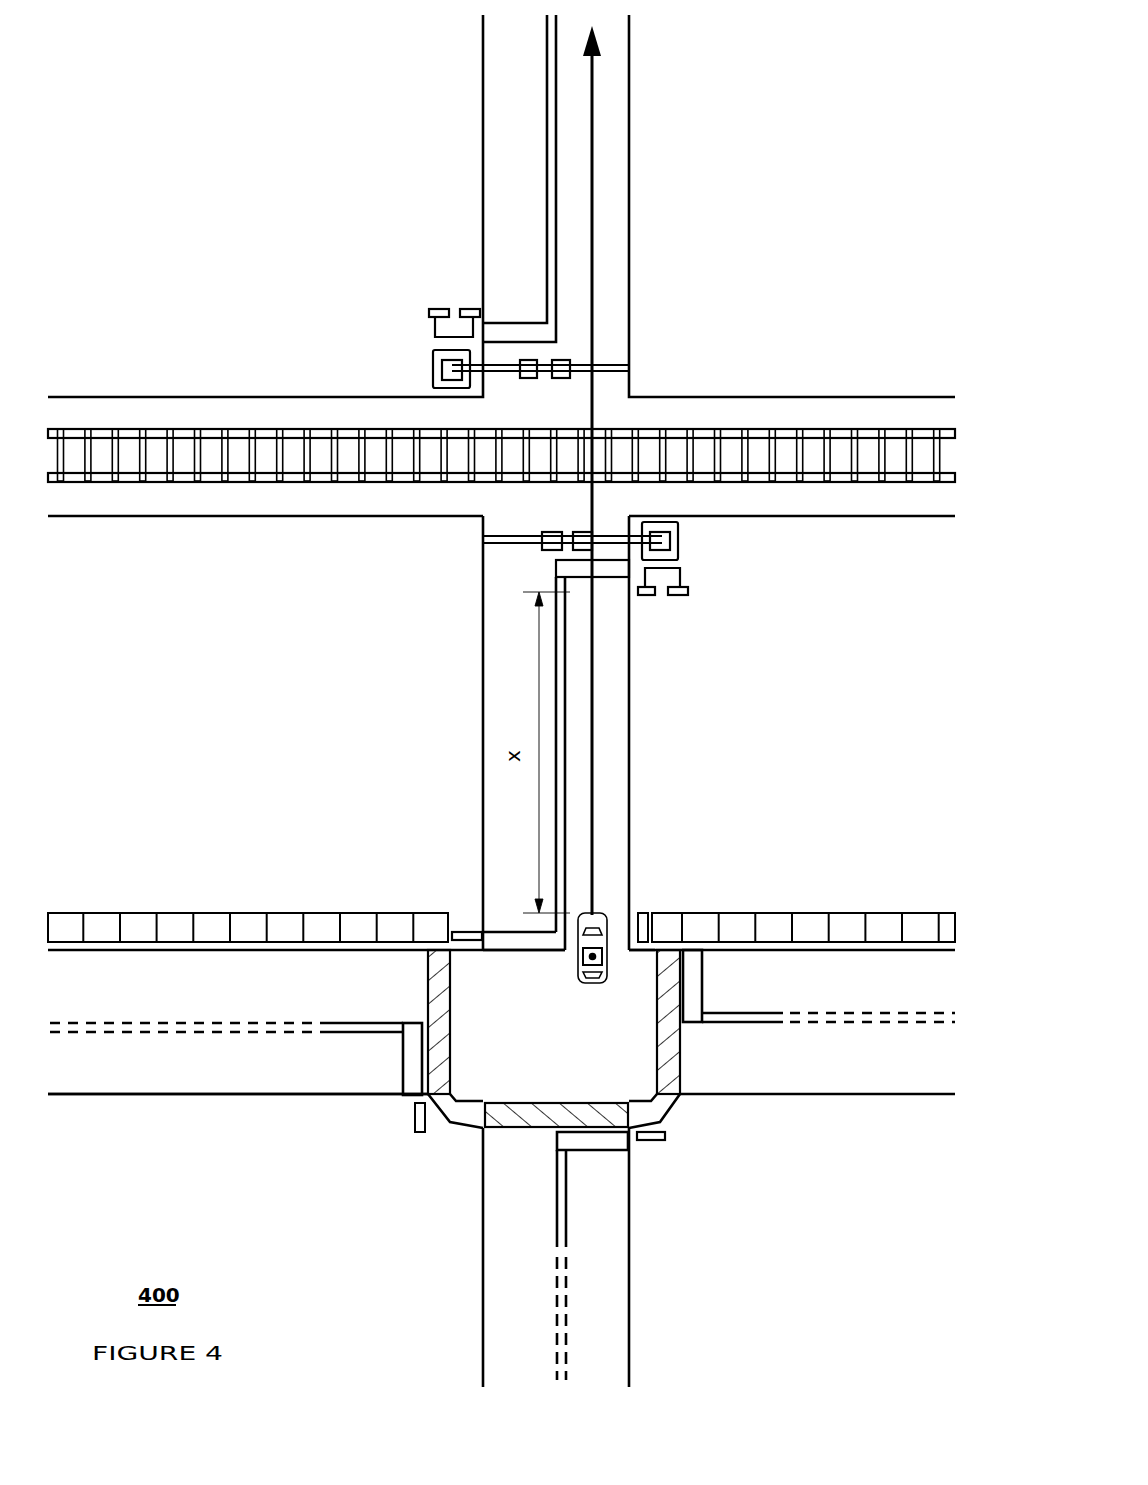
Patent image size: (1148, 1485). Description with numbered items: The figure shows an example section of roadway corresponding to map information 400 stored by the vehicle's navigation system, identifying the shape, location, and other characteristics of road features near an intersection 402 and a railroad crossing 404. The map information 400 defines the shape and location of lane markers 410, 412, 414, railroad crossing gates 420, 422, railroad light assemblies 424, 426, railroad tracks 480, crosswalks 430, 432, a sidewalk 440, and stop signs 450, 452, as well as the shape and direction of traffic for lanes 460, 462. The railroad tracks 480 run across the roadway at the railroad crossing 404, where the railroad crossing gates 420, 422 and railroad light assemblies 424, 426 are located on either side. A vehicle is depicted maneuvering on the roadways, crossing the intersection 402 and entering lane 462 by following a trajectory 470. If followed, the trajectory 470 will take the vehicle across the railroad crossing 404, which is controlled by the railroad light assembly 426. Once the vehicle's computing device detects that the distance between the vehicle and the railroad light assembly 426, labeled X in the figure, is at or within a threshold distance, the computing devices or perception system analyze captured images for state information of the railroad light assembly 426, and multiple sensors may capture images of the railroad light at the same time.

The map information 400 is at (578, 966).
The intersection 402 is at (574, 1032).
The railroad crossing 404 is at (575, 515).
The lane marker 410 is at (123, 1032).
The lane marker 412 is at (203, 1097).
The lane marker 414 is at (557, 117).
The railroad crossing gate 420 is at (477, 538).
The railroad crossing gate 422 is at (432, 352).
The railroad light assembly 424 is at (430, 323).
The railroad light assembly 426 is at (693, 602).
The crosswalk 430 is at (427, 957).
The crosswalk 432 is at (667, 950).
The sidewalk 440 is at (730, 913).
The stop sign 450 is at (460, 930).
The stop sign 452 is at (667, 1142).
The lane 460 is at (371, 1059).
The lane 462 is at (623, 680).
The trajectory 470 is at (593, 82).
The railroad tracks 480 is at (197, 428).